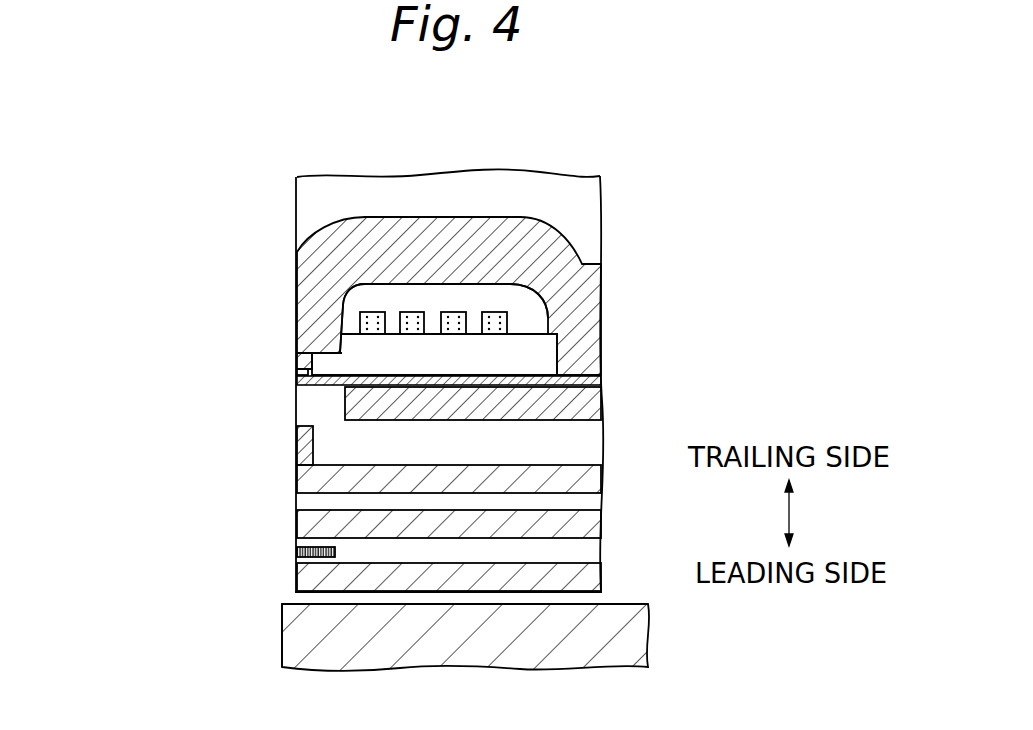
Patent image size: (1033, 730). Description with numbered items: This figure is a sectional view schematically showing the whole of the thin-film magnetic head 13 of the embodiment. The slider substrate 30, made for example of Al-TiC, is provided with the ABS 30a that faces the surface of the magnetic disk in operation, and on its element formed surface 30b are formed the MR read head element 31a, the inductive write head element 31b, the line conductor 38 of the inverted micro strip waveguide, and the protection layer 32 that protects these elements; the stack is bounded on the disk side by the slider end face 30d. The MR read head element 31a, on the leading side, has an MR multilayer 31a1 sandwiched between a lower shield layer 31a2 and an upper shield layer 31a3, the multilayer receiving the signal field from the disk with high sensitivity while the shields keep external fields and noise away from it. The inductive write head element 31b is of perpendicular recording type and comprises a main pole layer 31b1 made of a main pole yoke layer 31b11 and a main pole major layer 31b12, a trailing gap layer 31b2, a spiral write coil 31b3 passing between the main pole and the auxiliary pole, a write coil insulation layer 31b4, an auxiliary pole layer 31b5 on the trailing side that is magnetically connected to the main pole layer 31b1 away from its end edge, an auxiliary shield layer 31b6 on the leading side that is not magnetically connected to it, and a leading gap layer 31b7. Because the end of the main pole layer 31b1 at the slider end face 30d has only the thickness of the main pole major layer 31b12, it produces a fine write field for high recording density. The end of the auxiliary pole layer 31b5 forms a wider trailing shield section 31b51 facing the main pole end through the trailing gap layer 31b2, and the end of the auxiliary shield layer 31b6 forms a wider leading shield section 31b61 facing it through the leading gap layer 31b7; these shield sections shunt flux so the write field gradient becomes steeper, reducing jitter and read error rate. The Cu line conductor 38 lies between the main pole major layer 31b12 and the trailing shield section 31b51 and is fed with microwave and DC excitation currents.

The thin-film magnetic head 13 is at (601, 147).
The protection layer 32 is at (442, 187).
The slider end face 30d is at (298, 203).
The line conductor 38 is at (398, 375).
The inductive write head element 31b is at (115, 208).
The write coil insulation layer 31b4 is at (413, 297).
The write coil 31b3 is at (405, 310).
The auxiliary pole layer 31b5 is at (337, 283).
The trailing shield section 31b51 is at (318, 328).
The trailing gap layer 31b2 is at (340, 367).
The main pole layer 31b1 is at (190, 353).
The main pole major layer 31b12 is at (299, 380).
The main pole yoke layer 31b11 is at (343, 407).
The leading gap layer 31b7 is at (310, 408).
The leading shield section 31b61 is at (305, 449).
The auxiliary shield layer 31b6 is at (318, 484).
The MR read head element 31a is at (188, 502).
The upper shield layer 31a3 is at (318, 522).
The MR multilayer 31a1 is at (300, 553).
The lower shield layer 31a2 is at (318, 579).
The slider substrate 30 is at (623, 632).
The ABS 30a is at (283, 619).
The element formed surface 30b is at (380, 605).